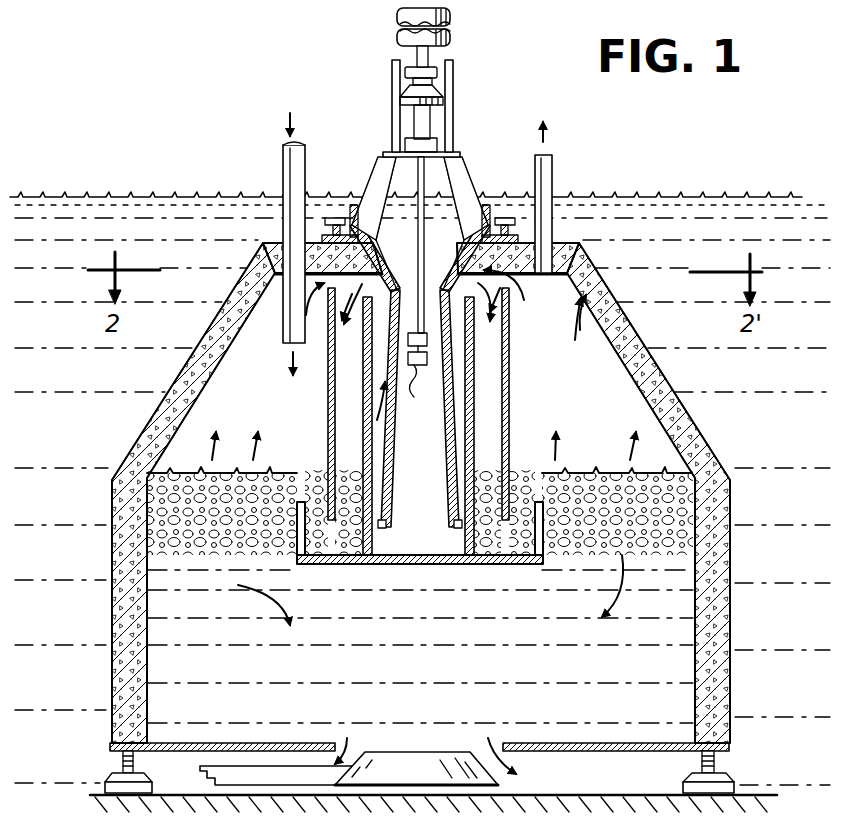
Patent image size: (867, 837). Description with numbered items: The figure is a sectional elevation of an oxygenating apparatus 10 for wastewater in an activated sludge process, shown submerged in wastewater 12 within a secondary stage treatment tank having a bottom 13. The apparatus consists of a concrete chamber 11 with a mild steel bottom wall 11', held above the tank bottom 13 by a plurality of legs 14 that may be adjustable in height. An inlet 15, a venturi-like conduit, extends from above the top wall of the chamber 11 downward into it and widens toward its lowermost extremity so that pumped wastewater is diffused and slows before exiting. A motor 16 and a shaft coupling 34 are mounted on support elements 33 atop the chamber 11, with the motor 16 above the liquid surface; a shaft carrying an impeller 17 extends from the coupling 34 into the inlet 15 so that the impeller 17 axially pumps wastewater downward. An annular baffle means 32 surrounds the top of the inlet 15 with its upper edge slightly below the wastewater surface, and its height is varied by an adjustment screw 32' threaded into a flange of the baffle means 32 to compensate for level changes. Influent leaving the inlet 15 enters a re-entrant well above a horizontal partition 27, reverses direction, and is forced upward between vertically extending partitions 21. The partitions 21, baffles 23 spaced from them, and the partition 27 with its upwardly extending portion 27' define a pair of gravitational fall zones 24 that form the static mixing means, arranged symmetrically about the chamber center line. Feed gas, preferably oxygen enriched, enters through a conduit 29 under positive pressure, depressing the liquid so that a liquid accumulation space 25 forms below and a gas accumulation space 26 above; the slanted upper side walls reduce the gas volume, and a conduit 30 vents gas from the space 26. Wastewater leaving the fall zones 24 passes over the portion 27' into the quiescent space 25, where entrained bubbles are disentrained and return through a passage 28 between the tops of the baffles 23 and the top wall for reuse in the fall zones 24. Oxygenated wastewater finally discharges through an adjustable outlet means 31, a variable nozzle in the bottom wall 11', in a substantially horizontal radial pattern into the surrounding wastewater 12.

The oxygenating apparatus 10 is at (697, 145).
The chamber 11 is at (443, 493).
The bottom wall 11' is at (419, 726).
The wastewater 12 is at (64, 605).
The bottom 13 is at (95, 787).
The legs 14 is at (120, 762).
The inlet 15 is at (390, 252).
The motor 16 is at (452, 32).
The impeller 17 is at (422, 292).
The partitions 21 is at (363, 387).
The baffles 23 is at (328, 437).
The gravitational fall zones 24 is at (350, 525).
The liquid accumulation space 25 is at (270, 660).
The gas accumulation space 26 is at (278, 418).
The horizontal partition 27 is at (420, 584).
The upwardly extending portion 27' is at (420, 511).
The passage 28 is at (500, 296).
The conduit 29 is at (275, 211).
The conduit 30 is at (560, 196).
The adjustable outlet means 31 is at (358, 751).
The baffle means 32 is at (500, 206).
The adjustment screw 32' is at (338, 206).
The support elements 33 is at (468, 157).
The shaft coupling 34 is at (392, 90).